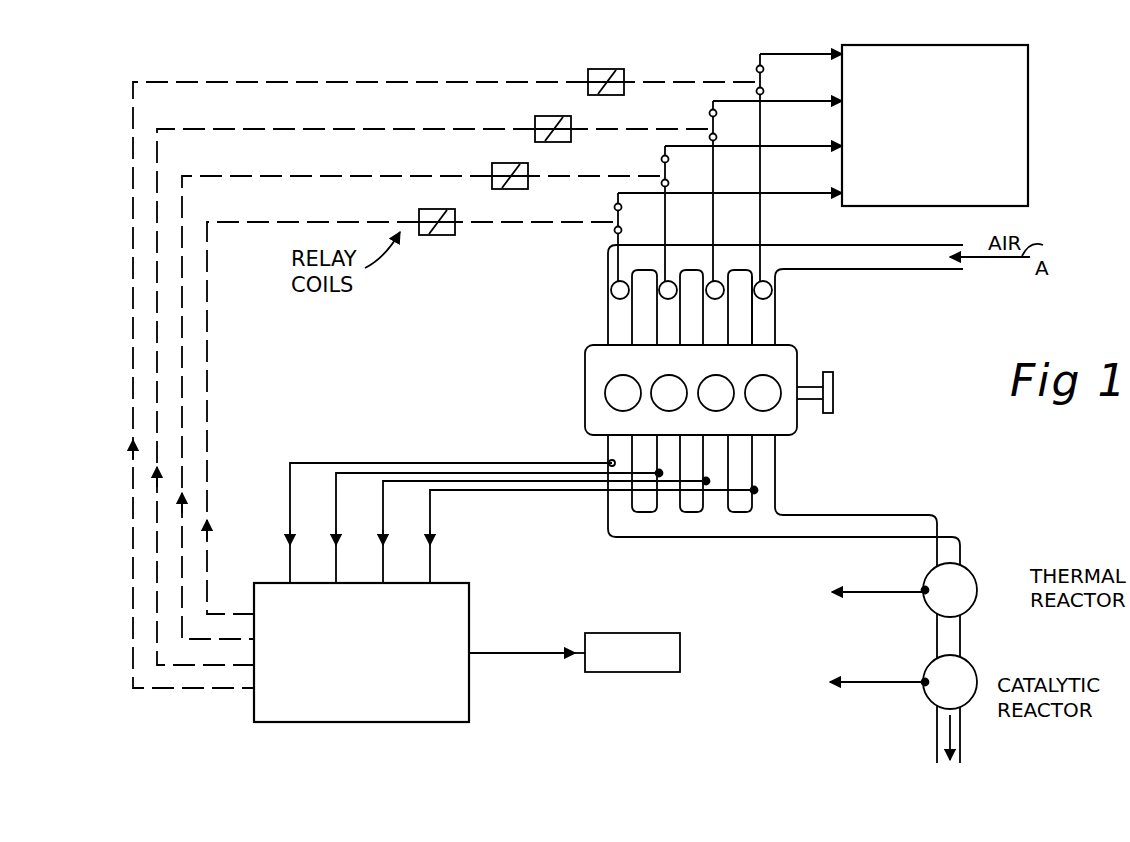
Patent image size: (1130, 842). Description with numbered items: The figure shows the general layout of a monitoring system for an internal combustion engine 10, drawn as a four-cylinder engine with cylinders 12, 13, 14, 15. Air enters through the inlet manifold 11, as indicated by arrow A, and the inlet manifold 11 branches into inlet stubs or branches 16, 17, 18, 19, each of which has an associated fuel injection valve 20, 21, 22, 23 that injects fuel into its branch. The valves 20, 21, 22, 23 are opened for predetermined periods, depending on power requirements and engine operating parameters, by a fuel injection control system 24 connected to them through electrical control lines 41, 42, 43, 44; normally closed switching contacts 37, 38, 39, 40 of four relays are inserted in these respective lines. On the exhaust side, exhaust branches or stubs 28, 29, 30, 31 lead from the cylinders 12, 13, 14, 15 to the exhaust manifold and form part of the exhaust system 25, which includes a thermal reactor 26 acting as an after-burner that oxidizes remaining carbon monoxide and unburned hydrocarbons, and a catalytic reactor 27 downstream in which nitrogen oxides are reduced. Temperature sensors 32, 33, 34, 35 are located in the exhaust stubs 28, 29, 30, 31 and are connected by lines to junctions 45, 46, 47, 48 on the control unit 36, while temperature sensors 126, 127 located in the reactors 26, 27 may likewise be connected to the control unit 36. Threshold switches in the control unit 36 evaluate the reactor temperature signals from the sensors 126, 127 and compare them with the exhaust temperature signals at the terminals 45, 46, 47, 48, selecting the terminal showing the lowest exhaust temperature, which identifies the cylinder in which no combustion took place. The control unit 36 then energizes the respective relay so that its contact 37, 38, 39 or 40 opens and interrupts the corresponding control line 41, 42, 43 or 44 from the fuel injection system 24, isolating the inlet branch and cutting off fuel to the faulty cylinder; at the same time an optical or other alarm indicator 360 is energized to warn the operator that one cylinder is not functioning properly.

The internal combustion engine 10 is at (792, 350).
The inlet manifold 11 is at (937, 258).
The cylinder 12 is at (612, 377).
The cylinder 13 is at (660, 377).
The cylinder 14 is at (708, 377).
The cylinder 15 is at (755, 376).
The inlet branch 16 is at (624, 313).
The inlet branch 17 is at (670, 313).
The inlet branch 18 is at (716, 313).
The inlet branch 19 is at (764, 313).
The fuel injection valve 20 is at (610, 290).
The fuel injection valve 21 is at (670, 281).
The fuel injection valve 22 is at (718, 281).
The fuel injection valve 23 is at (768, 281).
The fuel injection control system 24 is at (1010, 68).
The exhaust system 25 is at (788, 472).
The thermal reactor 26 is at (962, 580).
The catalytic reactor 27 is at (966, 677).
The exhaust branch 28 is at (616, 449).
The exhaust branch 29 is at (668, 453).
The exhaust branch 30 is at (718, 457).
The exhaust branch 31 is at (763, 477).
The temperature sensor 32 is at (609, 468).
The temperature sensor 33 is at (659, 478).
The temperature sensor 34 is at (706, 486).
The temperature sensor 35 is at (755, 495).
The control unit 36 is at (397, 707).
The switching contact 37 is at (621, 210).
The switching contact 38 is at (668, 163).
The switching contact 39 is at (728, 191).
The switching contact 40 is at (764, 69).
The electrical control line 41 is at (812, 196).
The electrical control line 42 is at (822, 149).
The electrical control line 43 is at (824, 104).
The electrical control line 44 is at (826, 56).
The junction 45 is at (288, 556).
The junction 46 is at (335, 556).
The junction 47 is at (382, 556).
The junction 48 is at (429, 556).
The temperature sensor 126 is at (922, 597).
The temperature sensor 127 is at (922, 690).
The alarm indicator 360 is at (660, 633).